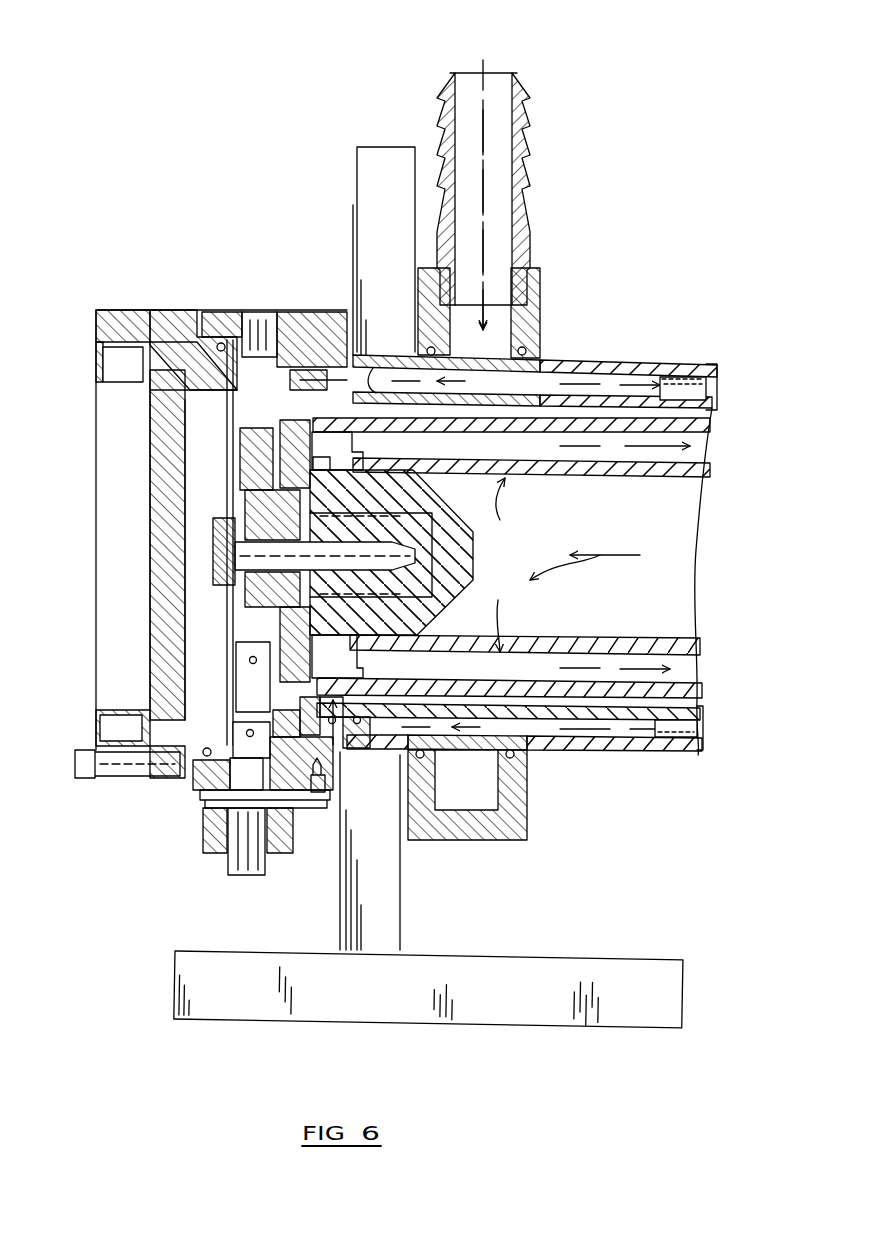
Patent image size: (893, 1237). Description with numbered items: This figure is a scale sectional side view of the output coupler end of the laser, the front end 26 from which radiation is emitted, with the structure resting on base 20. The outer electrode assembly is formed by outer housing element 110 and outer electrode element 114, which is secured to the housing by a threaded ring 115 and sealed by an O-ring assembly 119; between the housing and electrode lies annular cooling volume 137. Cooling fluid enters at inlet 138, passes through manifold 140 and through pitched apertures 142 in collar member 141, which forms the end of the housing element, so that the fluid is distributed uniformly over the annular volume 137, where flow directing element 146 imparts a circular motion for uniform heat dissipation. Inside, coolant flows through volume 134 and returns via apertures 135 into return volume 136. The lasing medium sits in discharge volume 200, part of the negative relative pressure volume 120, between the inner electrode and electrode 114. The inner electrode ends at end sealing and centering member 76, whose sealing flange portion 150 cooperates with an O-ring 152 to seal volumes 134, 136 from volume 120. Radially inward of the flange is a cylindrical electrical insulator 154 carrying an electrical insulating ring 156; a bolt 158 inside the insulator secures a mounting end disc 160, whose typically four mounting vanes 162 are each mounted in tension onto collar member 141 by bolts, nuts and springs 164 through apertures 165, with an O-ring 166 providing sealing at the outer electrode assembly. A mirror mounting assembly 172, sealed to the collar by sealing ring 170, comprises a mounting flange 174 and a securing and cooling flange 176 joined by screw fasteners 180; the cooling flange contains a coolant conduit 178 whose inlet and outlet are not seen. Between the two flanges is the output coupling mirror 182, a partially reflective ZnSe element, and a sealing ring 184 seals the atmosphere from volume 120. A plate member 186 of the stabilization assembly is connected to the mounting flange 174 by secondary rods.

The base 20 is at (188, 1016).
The front end 26 is at (181, 235).
The end sealing and centering member 76 is at (258, 340).
The outer housing element 110 is at (712, 364).
The outer electrode element 114 is at (706, 410).
The threaded ring 115 is at (308, 372).
The O-ring assembly 119 is at (353, 280).
The negative relative pressure volume 120 is at (205, 514).
The volume 134 is at (675, 528).
The apertures 135 is at (492, 640).
The volume 136 is at (680, 670).
The volume 137 is at (640, 735).
The inlet 138 is at (493, 60).
The manifold 140 is at (528, 298).
The collar member 141 is at (390, 770).
The apertures 142 is at (522, 351).
The flow directing element 146 is at (700, 742).
The sealing flange portion 150 is at (273, 398).
The O-ring 152 is at (300, 812).
The electrical insulator 154 is at (168, 765).
The electrical insulating ring 156 is at (235, 775).
The bolt 158 is at (240, 602).
The mounting end disc 160 is at (247, 453).
The mounting vanes 162 is at (252, 682).
The bolts, nuts and springs 164 is at (250, 872).
The apertures 165 is at (268, 340).
The O-ring 166 is at (205, 832).
The sealing ring 170 is at (219, 343).
The mirror mounting assembly 172 is at (92, 312).
The mounting flange 174 is at (166, 310).
The securing and cooling flange 176 is at (105, 323).
The conduit 178 is at (120, 365).
The screw fasteners 180 is at (92, 772).
The output coupling mirror 182 is at (160, 477).
The sealing ring 184 is at (150, 395).
The plate member 186 is at (385, 162).
The discharge volume 200 is at (612, 420).